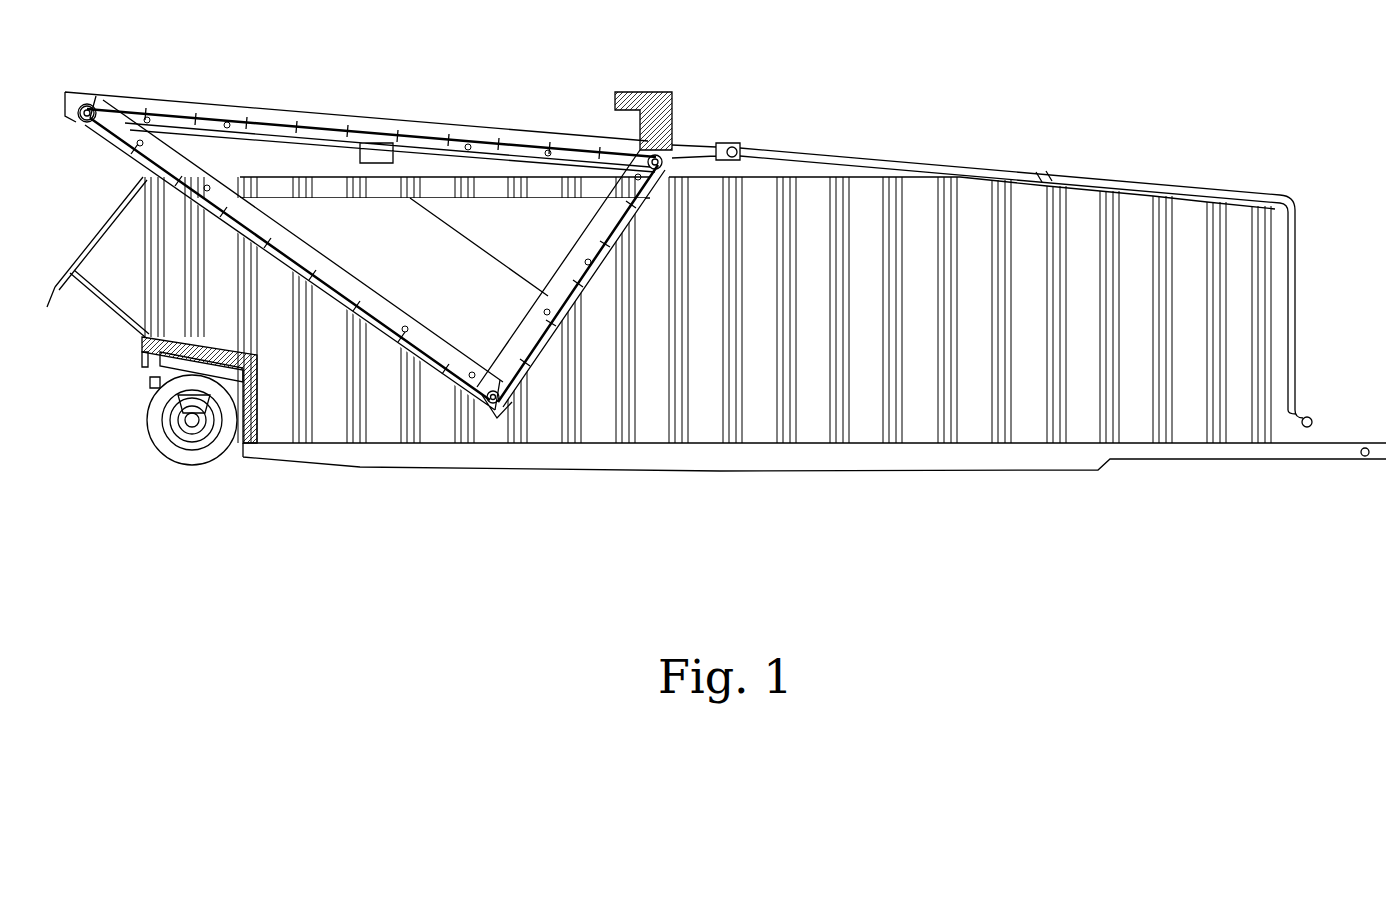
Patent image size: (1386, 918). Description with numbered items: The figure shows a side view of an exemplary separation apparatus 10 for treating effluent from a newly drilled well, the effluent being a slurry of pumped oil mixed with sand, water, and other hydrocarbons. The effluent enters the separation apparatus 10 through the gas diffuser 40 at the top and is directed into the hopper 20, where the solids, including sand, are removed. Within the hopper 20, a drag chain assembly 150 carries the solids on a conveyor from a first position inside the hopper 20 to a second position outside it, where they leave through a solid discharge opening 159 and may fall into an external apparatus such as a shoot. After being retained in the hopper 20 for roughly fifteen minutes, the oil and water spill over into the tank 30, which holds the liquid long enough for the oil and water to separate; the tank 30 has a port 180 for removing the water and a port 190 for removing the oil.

The separation apparatus 10 is at (629, 583).
The hopper 20 is at (498, 322).
The tank 30 is at (1018, 358).
The gas diffuser 40 is at (480, 157).
The drag chain assembly 150 is at (395, 345).
The solid discharge opening 159 is at (75, 125).
The port 180 is at (1277, 408).
The port 190 is at (1280, 352).